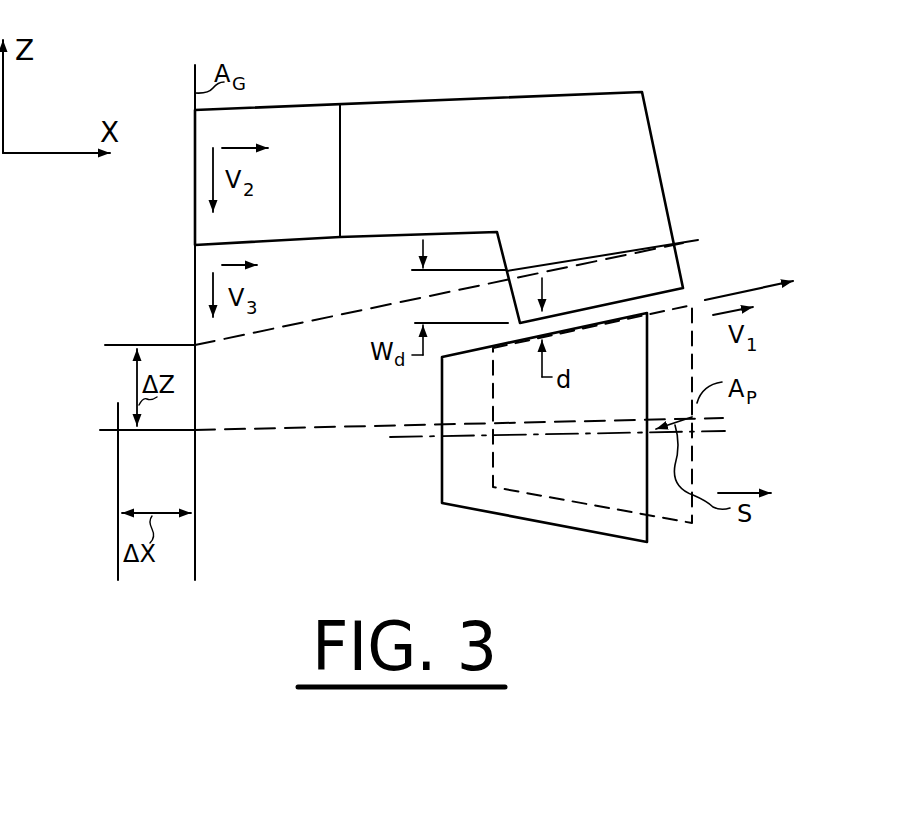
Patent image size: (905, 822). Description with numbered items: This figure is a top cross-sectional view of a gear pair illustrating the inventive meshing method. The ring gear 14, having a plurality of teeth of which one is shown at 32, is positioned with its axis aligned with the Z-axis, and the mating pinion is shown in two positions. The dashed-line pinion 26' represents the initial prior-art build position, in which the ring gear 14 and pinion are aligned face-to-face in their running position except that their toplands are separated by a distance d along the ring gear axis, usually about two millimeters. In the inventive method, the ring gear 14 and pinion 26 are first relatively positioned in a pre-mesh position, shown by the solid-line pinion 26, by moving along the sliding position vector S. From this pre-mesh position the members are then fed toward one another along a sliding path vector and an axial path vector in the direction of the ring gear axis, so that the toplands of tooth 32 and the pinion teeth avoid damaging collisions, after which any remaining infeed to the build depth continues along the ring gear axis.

The ring gear 14 is at (597, 110).
The tooth 32 is at (648, 270).
The pinion 26 is at (531, 441).
The pinion in initial build position 26' is at (631, 414).